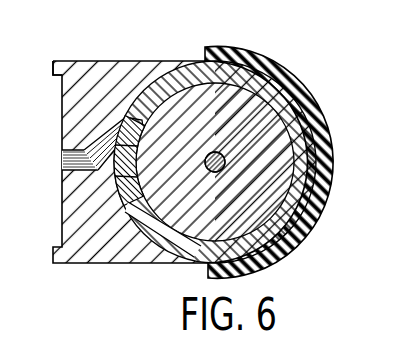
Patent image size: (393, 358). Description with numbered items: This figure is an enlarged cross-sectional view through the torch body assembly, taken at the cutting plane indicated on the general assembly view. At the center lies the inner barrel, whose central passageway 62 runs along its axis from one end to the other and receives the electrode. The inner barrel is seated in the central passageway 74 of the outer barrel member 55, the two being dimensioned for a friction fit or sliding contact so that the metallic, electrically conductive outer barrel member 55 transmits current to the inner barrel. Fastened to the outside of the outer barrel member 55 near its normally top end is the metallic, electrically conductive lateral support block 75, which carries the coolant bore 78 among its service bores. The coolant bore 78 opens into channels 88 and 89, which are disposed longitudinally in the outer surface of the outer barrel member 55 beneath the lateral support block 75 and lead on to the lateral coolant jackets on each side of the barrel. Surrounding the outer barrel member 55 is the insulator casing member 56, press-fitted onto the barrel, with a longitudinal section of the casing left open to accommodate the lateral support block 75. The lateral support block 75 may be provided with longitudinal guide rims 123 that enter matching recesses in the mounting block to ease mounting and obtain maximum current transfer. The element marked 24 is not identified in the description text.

The shaft body 24 is at (267, 115).
The outer barrel member 55 is at (200, 250).
The insulator casing member 56 is at (293, 70).
The central passageway 62 is at (222, 157).
The central passageway 74 is at (190, 86).
The lateral support block 75 is at (85, 72).
The coolant bore 78 is at (63, 163).
The channel 88 is at (130, 196).
The channel 89 is at (130, 118).
The longitudinal guide rims 123 is at (53, 72).